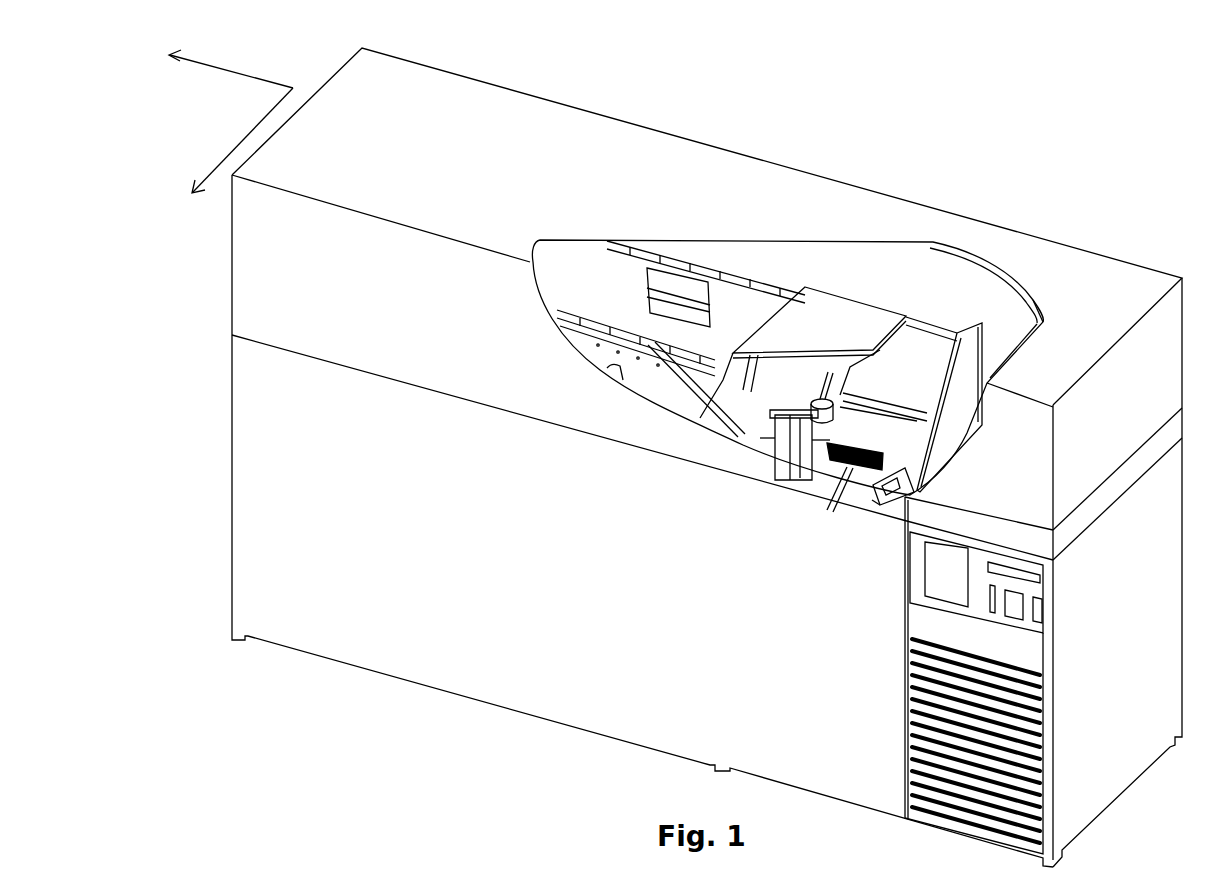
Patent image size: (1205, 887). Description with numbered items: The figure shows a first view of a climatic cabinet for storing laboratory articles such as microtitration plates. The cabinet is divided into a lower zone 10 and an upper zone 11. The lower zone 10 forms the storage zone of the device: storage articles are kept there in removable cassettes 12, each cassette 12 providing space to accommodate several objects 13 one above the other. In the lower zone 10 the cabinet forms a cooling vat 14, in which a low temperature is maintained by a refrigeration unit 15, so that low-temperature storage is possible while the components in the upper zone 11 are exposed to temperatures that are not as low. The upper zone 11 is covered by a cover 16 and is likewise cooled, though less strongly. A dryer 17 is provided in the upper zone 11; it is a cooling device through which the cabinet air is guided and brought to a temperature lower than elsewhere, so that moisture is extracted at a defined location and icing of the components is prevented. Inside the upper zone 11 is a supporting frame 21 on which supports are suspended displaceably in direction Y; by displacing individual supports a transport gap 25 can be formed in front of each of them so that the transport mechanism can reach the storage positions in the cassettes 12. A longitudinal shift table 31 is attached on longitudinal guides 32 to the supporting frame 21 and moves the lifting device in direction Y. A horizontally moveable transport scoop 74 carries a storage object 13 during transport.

The lower zone 10 is at (625, 440).
The upper zone 11 is at (625, 440).
The cassette 12 is at (873, 493).
The object 13 is at (847, 460).
The cooling vat 14 is at (508, 618).
The refrigeration unit 15 is at (1105, 752).
The cover 16 is at (362, 50).
The dryer 17 is at (1017, 352).
The supporting frame 21 is at (975, 320).
The transport gap 25 is at (823, 472).
The longitudinal shift table 31 is at (818, 313).
The longitudinal guides 32 is at (747, 280).
The transport scoop 74 is at (826, 426).